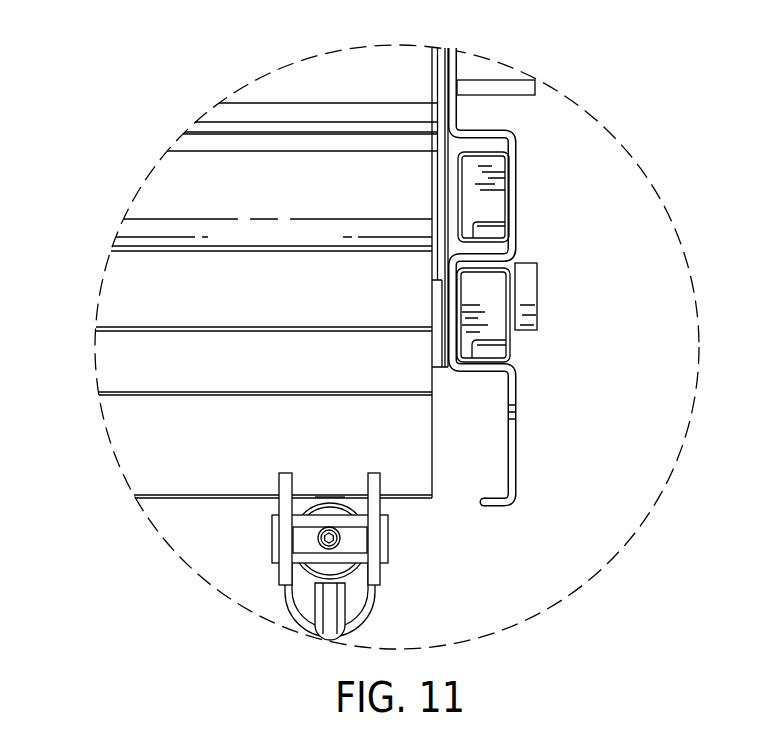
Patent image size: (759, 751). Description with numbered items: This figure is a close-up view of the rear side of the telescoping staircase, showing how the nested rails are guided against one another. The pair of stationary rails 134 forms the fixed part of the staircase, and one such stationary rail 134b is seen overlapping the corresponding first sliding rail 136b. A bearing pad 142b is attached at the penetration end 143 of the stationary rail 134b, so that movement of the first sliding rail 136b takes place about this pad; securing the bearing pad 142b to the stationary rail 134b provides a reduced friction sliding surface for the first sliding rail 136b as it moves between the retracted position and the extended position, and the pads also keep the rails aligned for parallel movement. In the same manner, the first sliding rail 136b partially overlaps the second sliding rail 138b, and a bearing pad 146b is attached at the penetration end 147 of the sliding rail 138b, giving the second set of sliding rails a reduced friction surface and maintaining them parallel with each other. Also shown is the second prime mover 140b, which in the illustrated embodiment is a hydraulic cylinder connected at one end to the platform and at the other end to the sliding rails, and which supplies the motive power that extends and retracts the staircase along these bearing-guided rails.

The pair of stationary rails 134 is at (147, 447).
The stationary rail 134b is at (452, 118).
The first sliding rail 136b is at (513, 252).
The second sliding rail 138b is at (512, 430).
The second prime mover 140b is at (375, 573).
The bearing pad 142b is at (478, 188).
The penetration end 143 is at (487, 220).
The bearing pad 146b is at (485, 298).
The penetration end 147 is at (480, 344).